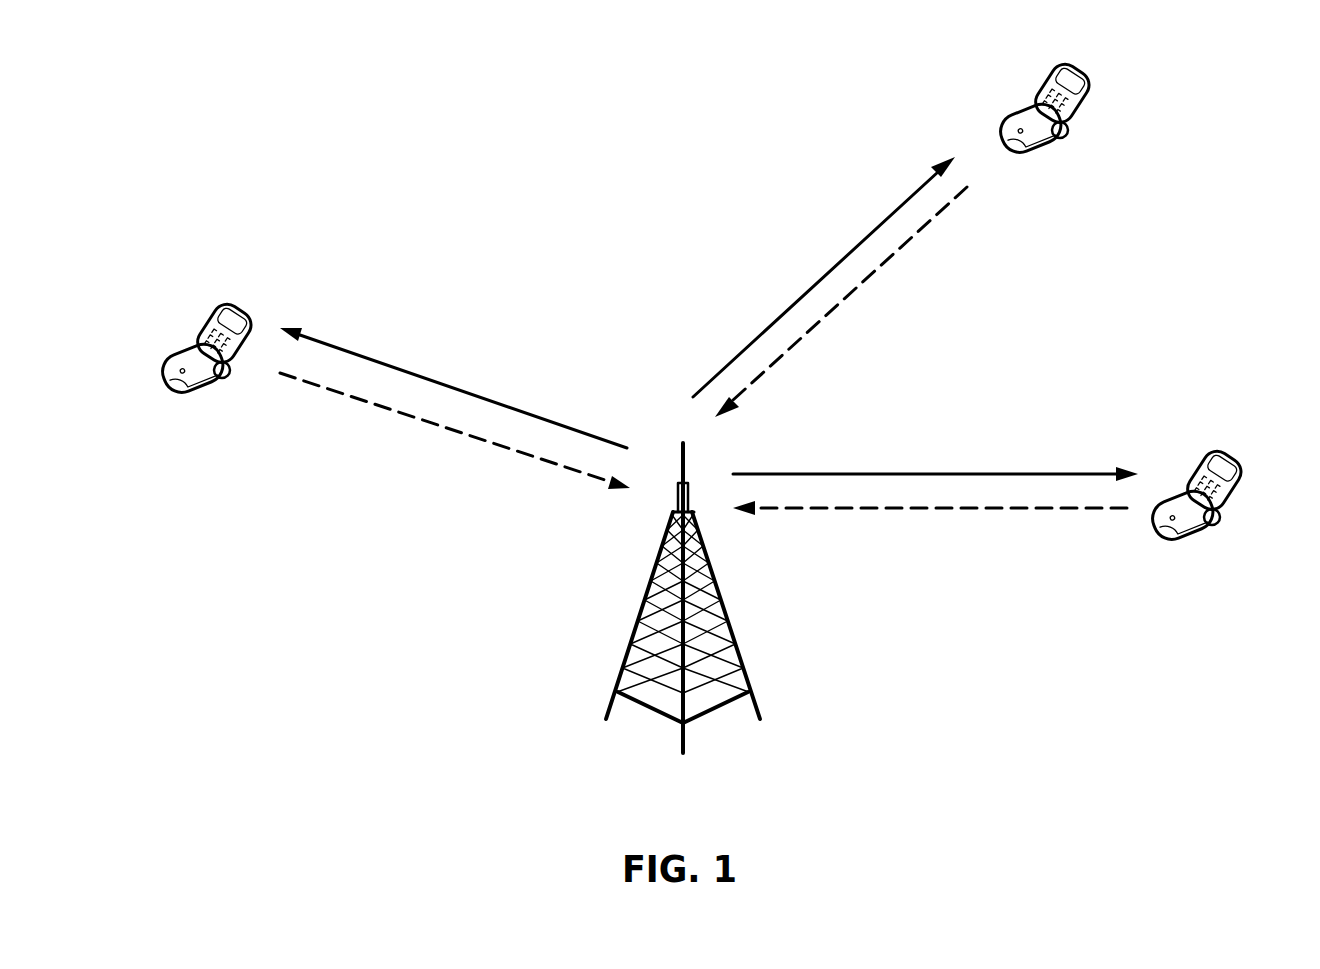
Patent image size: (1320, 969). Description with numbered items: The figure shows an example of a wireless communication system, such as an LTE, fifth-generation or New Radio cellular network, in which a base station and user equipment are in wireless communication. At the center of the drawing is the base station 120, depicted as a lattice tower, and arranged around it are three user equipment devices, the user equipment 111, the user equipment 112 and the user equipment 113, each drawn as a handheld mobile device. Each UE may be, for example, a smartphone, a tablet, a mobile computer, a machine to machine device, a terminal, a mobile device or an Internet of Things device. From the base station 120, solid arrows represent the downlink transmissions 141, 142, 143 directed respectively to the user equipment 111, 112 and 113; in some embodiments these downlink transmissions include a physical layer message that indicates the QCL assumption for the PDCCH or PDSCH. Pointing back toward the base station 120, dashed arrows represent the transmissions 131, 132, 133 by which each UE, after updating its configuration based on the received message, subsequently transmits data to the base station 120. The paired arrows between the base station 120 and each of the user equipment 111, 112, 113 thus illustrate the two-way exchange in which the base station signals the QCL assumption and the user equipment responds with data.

The user equipment 111 is at (217, 388).
The user equipment 112 is at (1205, 537).
The user equipment 113 is at (1058, 148).
The base station 120 is at (743, 675).
The transmission 131 is at (493, 445).
The transmission 132 is at (897, 508).
The transmission 133 is at (867, 275).
The downlink transmission 141 is at (388, 367).
The downlink transmission 142 is at (1048, 474).
The downlink transmission 143 is at (875, 228).